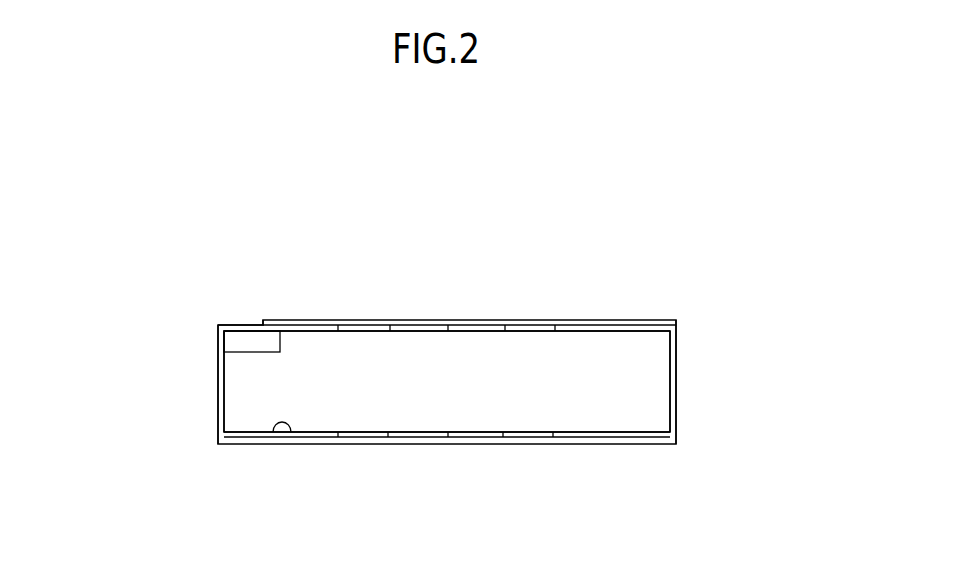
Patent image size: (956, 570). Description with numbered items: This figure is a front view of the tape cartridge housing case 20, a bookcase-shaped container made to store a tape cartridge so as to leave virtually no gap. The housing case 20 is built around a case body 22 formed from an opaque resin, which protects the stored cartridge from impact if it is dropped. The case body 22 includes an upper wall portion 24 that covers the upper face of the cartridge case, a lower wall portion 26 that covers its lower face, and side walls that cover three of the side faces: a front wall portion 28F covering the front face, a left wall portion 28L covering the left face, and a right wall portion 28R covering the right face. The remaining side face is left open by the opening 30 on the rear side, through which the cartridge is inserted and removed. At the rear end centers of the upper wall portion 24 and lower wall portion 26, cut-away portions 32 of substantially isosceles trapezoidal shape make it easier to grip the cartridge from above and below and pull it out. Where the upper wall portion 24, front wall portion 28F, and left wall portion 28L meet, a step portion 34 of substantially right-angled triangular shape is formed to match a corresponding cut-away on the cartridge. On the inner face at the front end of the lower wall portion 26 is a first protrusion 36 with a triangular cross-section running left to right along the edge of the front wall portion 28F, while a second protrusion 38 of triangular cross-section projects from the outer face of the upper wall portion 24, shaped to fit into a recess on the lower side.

The tape cartridge housing case 20 is at (548, 255).
The case body 22 is at (677, 340).
The upper wall portion 24 is at (242, 325).
The lower wall portion 26 is at (588, 444).
The left wall portion 28L is at (218, 398).
The right wall portion 28R is at (677, 395).
The front wall portion 28F is at (635, 360).
The opening 30 is at (291, 432).
The cut-away portions 32 is at (434, 331).
The step portion 34 is at (252, 352).
The first protrusion 36 is at (364, 432).
The second protrusion 38 is at (444, 320).